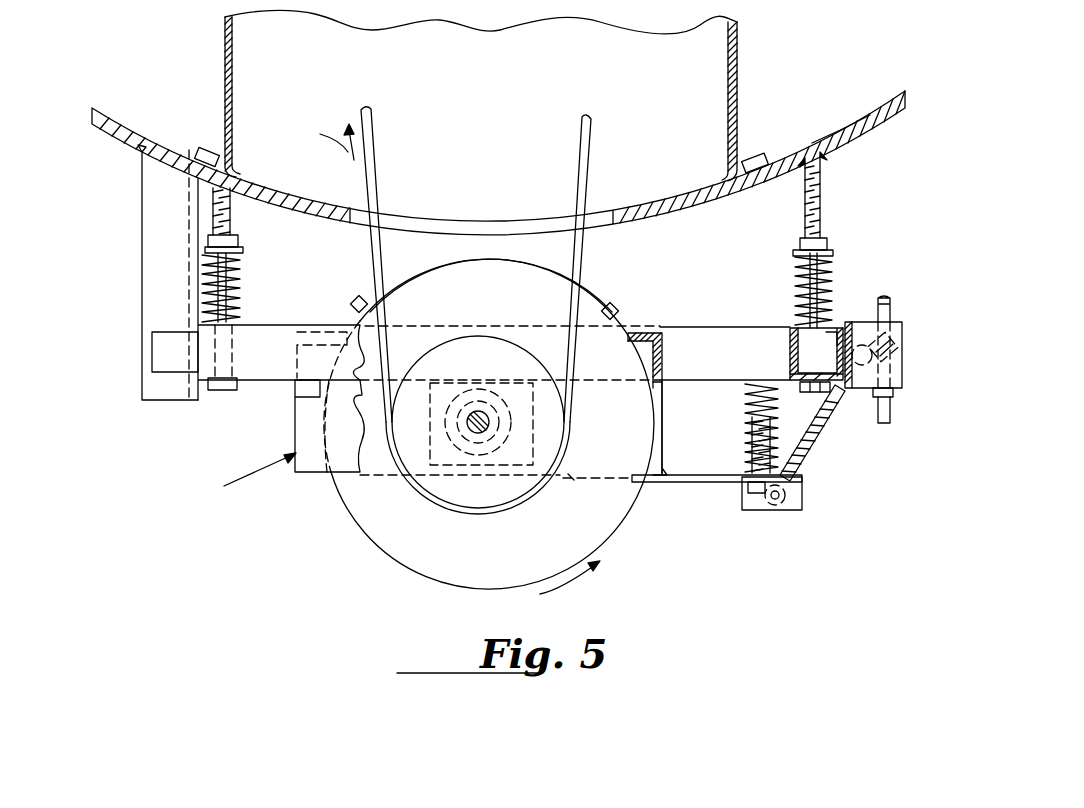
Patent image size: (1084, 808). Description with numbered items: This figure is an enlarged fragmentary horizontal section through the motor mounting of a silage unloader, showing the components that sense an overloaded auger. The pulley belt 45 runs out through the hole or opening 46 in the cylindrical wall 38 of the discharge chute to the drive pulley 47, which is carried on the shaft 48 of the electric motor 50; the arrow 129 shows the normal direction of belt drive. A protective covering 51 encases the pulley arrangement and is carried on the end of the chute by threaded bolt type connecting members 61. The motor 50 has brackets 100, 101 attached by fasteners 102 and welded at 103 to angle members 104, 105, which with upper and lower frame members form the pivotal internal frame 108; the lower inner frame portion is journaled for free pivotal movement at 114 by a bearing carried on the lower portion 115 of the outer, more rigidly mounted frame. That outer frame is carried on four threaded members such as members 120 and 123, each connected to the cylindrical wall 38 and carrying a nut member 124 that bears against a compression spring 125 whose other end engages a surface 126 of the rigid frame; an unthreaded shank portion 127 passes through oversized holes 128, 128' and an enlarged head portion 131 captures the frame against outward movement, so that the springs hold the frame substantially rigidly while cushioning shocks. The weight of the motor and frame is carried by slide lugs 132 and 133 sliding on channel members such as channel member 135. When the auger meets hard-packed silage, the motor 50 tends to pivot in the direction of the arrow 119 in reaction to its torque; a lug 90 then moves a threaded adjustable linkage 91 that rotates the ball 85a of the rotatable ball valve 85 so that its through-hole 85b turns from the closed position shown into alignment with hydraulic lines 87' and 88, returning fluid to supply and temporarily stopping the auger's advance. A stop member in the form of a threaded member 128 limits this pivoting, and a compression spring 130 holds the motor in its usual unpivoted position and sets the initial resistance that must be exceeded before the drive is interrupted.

The cylindrical wall 38 is at (817, 143).
The pulley belt 45 is at (585, 147).
The hole or opening 46 is at (462, 225).
The drive pulley 47 is at (440, 487).
The shaft 48 is at (478, 418).
The electric motor 50 is at (405, 540).
The protective covering 51 is at (740, 54).
The threaded bolt type connecting members 61 is at (752, 152).
The rotatable ball valve 85 is at (903, 382).
The ball 85a is at (896, 340).
The through-hole 85b is at (890, 362).
The hydraulic line 87' is at (904, 291).
The hydraulic line 88 is at (892, 420).
The lug 90 is at (803, 500).
The threaded adjustable linkage 91 is at (823, 425).
The bracket 100 is at (590, 300).
The bracket 101 is at (367, 302).
The fasteners 102 is at (613, 308).
The weld connection 103 is at (652, 346).
The angle member 104 is at (655, 372).
The angle member 105 is at (296, 345).
The internal frame 108 is at (245, 477).
The pivotal journal 114 is at (524, 500).
The lower portion of outer frame 115 is at (773, 332).
The arrow 119 is at (592, 583).
The threaded member 120 is at (825, 200).
The threaded member 123 is at (224, 392).
The nut member 124 is at (827, 245).
The compression spring 125 is at (832, 270).
The surface of rigid frame member 126 is at (830, 330).
The unthreaded shank portion 127 is at (790, 340).
The oversized hole 128 is at (816, 380).
The oversized hole 128' is at (806, 404).
The arrow 129 is at (322, 137).
The compression spring 130 is at (752, 438).
The enlarged head portion 131 is at (798, 382).
The slide lug 132 is at (305, 385).
The slide lug 133 is at (163, 357).
The channel member 135 is at (171, 395).